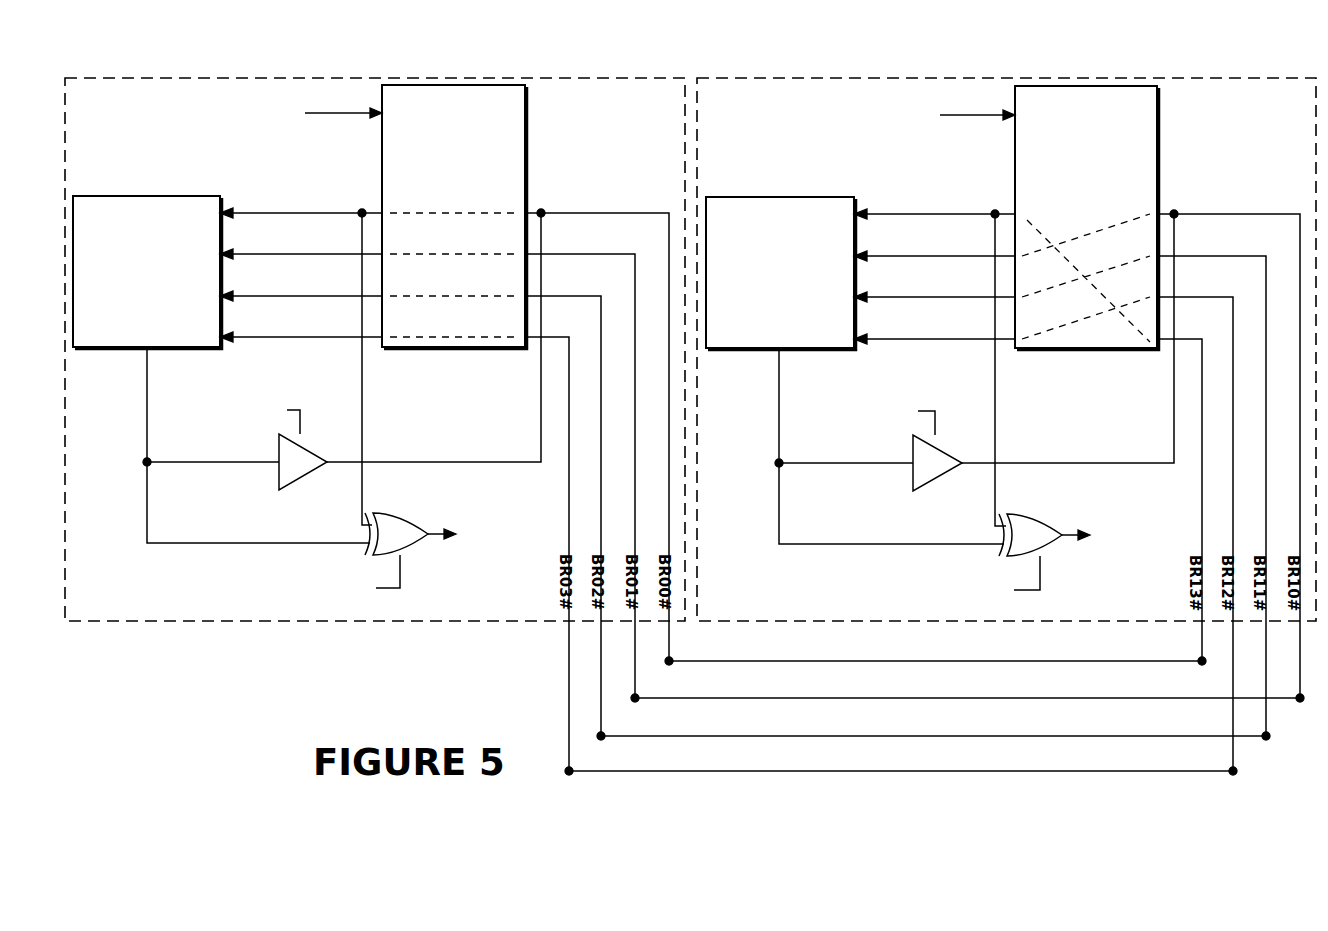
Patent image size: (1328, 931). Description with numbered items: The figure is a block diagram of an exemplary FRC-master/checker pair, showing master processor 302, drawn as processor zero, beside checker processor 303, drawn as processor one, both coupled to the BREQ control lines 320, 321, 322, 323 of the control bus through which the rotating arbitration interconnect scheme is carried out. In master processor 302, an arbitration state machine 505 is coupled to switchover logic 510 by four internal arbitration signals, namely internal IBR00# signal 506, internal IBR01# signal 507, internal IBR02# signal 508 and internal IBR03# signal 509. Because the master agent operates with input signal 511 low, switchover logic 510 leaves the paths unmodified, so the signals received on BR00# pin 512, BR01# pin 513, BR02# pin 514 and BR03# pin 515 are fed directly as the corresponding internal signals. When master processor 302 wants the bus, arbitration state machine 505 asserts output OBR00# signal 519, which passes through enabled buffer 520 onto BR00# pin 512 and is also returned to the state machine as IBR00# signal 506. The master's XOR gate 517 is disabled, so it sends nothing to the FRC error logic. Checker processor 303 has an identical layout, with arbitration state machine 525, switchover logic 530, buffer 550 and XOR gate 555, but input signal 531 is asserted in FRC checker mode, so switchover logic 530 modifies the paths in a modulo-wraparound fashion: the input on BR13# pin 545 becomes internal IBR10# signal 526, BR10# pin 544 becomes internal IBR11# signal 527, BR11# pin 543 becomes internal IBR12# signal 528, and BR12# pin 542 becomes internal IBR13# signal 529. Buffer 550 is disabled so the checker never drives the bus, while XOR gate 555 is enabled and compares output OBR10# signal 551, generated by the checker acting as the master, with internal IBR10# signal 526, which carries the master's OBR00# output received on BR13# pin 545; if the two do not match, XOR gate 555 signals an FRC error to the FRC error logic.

The processor 302 is at (612, 78).
The processor 303 is at (744, 78).
The arbitration state machine 505 is at (147, 272).
The switchover logic 510 is at (454, 217).
The input signal 511 is at (343, 105).
The internal IBR00# signal 506 is at (313, 212).
The internal IBR01# signal 507 is at (313, 253).
The internal IBR02# signal 508 is at (313, 295).
The internal IBR03# signal 509 is at (313, 336).
The output OBR00# signal 519 is at (147, 383).
The buffer 520 is at (330, 440).
The XOR gate 517 is at (418, 519).
The BREQ0# control line 320 is at (746, 661).
The BREQ1# control line 321 is at (746, 698).
The BREQ2# control line 322 is at (746, 736).
The BREQ3# control line 323 is at (743, 771).
The BR00# pin 512 is at (669, 665).
The BR01# pin 513 is at (635, 702).
The BR02# pin 514 is at (601, 740).
The BR03# pin 515 is at (569, 771).
The arbitration state machine 525 is at (781, 273).
The switchover logic 530 is at (1087, 218).
The input signal 531 is at (977, 107).
The internal IBR10# signal 526 is at (947, 213).
The internal IBR11# signal 527 is at (947, 255).
The internal IBR12# signal 528 is at (947, 296).
The internal IBR13# signal 529 is at (947, 338).
The output OBR10# signal 551 is at (779, 414).
The buffer 550 is at (963, 441).
The XOR gate 555 is at (1053, 521).
The BR13# pin 545 is at (1204, 665).
The BR10# pin 544 is at (1302, 702).
The BR11# pin 543 is at (1268, 740).
The BR12# pin 542 is at (1235, 775).